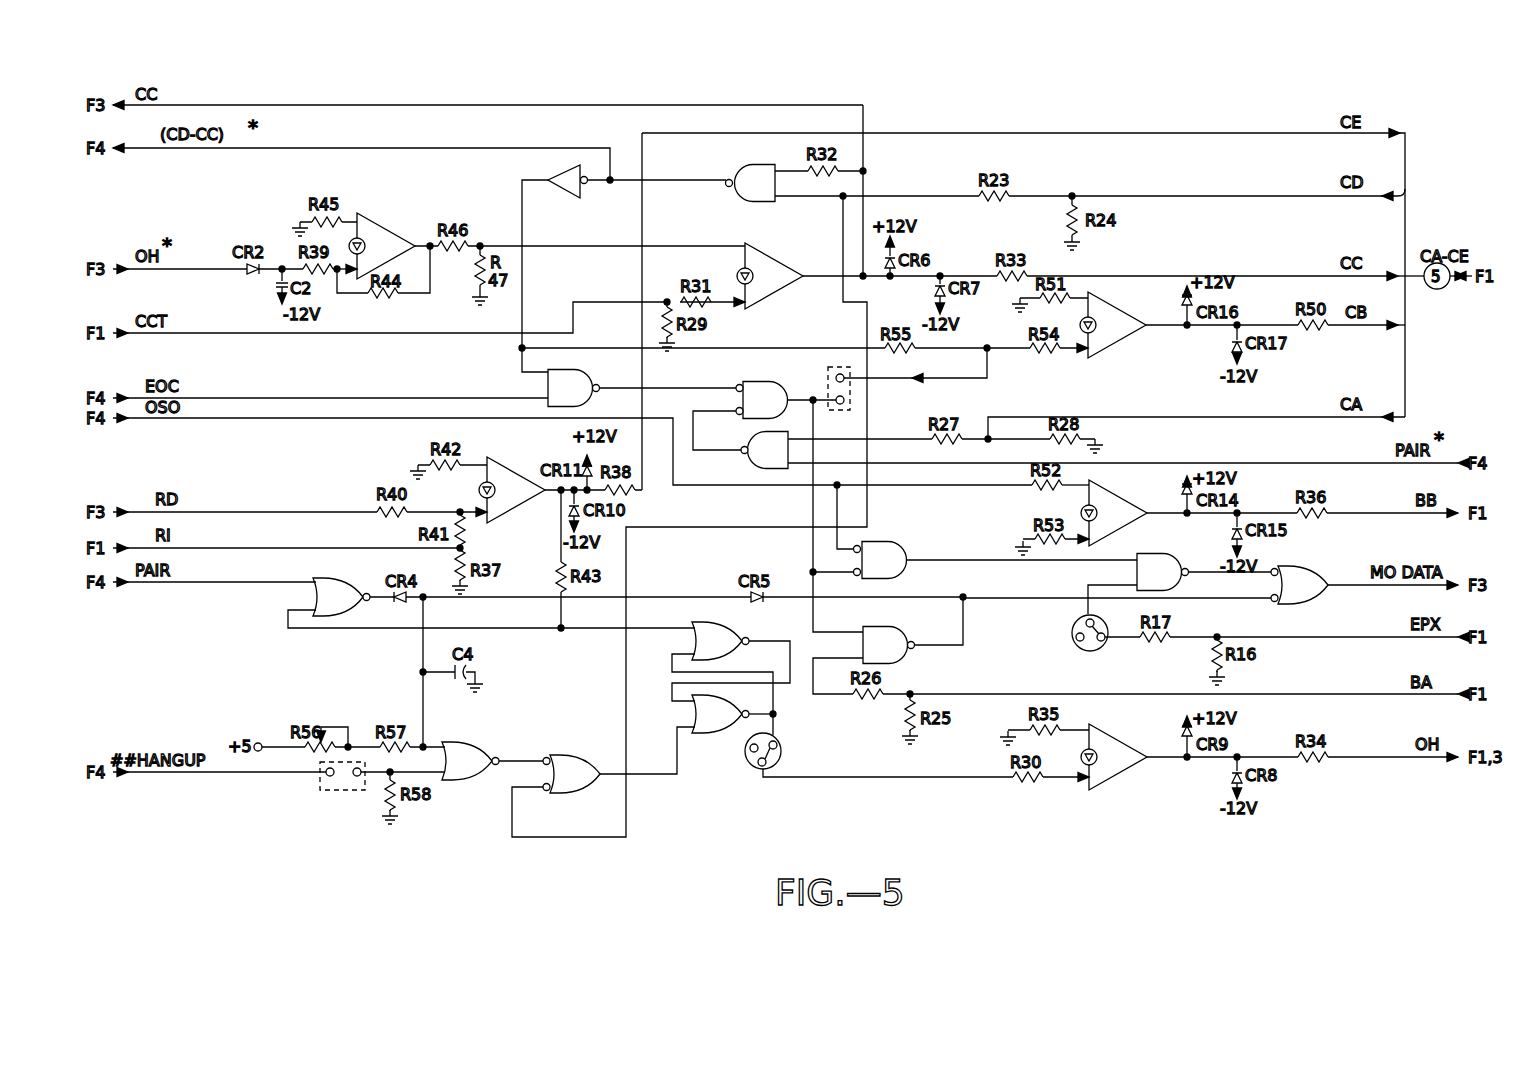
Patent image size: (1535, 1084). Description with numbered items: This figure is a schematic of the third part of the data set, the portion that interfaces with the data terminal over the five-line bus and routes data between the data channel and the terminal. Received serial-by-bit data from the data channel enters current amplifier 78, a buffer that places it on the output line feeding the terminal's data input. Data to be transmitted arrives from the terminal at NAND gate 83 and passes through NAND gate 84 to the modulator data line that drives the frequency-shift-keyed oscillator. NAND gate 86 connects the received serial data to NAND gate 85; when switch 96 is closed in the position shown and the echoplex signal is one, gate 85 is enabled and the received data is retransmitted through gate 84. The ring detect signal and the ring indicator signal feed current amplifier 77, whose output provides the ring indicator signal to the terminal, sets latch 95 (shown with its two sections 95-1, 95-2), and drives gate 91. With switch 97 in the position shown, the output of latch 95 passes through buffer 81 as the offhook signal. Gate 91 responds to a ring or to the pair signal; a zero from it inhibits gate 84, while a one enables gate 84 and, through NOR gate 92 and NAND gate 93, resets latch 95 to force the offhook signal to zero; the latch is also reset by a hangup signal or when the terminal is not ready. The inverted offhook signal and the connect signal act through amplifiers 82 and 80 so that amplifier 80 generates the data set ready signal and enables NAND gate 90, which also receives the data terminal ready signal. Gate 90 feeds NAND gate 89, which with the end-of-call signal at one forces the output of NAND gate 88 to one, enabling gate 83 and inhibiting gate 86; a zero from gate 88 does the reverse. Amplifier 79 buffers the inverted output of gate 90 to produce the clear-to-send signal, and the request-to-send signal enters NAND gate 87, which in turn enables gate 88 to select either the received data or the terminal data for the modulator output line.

The current amplifier 77 is at (505, 462).
The current amplifier 78 is at (1112, 492).
The amplifier 79 is at (1114, 348).
The amplifier 80 is at (772, 296).
The buffer 81 is at (1112, 790).
The amplifier 82 is at (386, 230).
The NAND gate 83 is at (905, 658).
The NAND gate 84 is at (1315, 599).
The NAND gate 85 is at (1165, 557).
The NAND gate 86 is at (901, 545).
The NAND gate 87 is at (774, 436).
The NAND gate 88 is at (770, 381).
The NAND gate 89 is at (585, 375).
The NAND gate 90 is at (740, 200).
The gate 91 is at (325, 588).
The NOR gate 92 is at (478, 744).
The NAND gate 93 is at (565, 758).
The latch 95 is at (716, 695).
The NOR gate of latch 95-1 is at (730, 630).
The NOR gate of latch 95-2 is at (706, 734).
The switch 96 is at (1097, 650).
The switch 97 is at (781, 752).